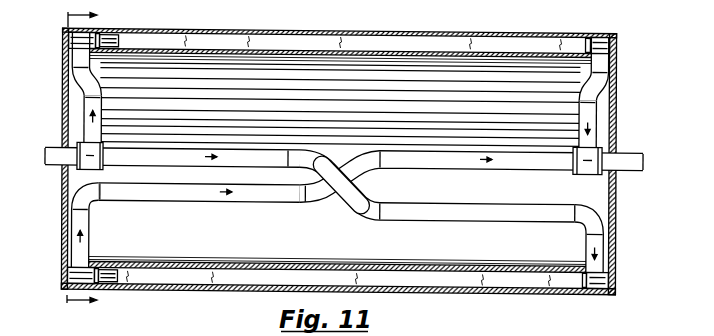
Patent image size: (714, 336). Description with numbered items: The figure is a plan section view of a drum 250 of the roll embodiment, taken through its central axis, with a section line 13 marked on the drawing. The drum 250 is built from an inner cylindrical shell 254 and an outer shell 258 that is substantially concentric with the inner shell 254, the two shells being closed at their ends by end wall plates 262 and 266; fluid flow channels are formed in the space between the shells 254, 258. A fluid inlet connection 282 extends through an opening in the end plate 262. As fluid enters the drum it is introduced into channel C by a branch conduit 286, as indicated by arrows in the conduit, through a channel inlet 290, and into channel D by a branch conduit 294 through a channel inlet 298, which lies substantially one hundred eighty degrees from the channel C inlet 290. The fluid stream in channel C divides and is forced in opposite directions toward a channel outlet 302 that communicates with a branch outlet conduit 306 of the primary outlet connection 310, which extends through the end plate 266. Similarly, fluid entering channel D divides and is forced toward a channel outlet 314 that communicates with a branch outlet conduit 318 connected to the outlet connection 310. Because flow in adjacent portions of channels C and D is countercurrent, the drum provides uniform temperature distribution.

The section line 13- 13 is at (67, 162).
The drum 250 is at (264, 296).
The inner cylindrical shell 254 is at (348, 262).
The outer shell 258 is at (431, 287).
The end wall plate 262 is at (62, 250).
The end wall plate 266 is at (616, 187).
The fluid inlet connection 282 is at (50, 165).
The branch conduit 286 is at (400, 213).
The channel inlet 290 is at (587, 250).
The branch conduit 294 is at (100, 104).
The channel inlet 298 is at (104, 64).
The channel outlet 302 is at (592, 64).
The branch outlet conduit 306 is at (595, 110).
The primary outlet connection 310 is at (640, 151).
The channel outlet 314 is at (88, 250).
The branch outlet conduit 318 is at (213, 204).